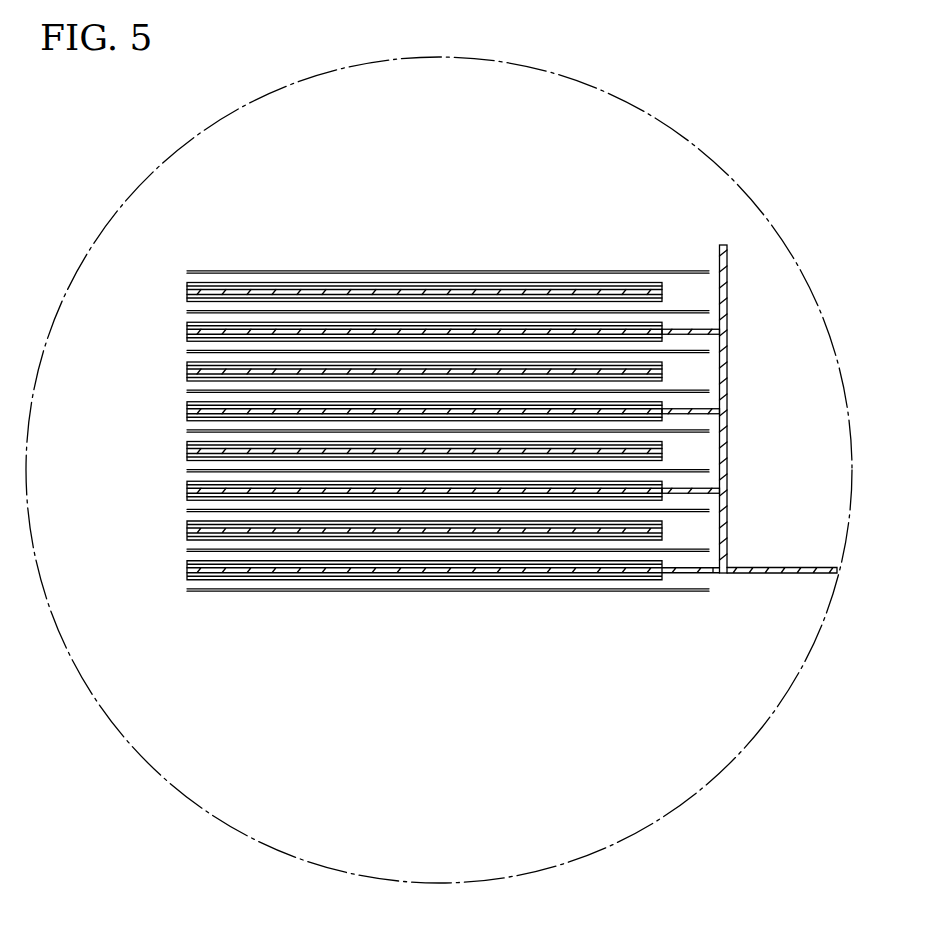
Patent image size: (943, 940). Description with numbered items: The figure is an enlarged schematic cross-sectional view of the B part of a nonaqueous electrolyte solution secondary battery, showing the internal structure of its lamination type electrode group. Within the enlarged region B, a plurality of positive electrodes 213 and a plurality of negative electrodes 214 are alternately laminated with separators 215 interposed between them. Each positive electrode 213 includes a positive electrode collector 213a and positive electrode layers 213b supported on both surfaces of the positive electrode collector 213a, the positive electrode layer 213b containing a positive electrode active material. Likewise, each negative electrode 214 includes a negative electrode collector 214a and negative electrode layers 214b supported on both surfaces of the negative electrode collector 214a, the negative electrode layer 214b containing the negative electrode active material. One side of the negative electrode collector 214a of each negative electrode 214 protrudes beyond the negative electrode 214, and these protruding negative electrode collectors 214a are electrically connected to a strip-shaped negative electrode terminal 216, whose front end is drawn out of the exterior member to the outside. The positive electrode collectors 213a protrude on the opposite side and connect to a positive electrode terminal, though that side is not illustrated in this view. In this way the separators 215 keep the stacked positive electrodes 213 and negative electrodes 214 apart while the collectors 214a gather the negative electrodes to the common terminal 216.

The positive electrode 213 is at (351, 437).
The positive electrode collector 213a is at (187, 531).
The positive electrode layer 213b is at (187, 523).
The negative electrode 214 is at (445, 495).
The negative electrode collector 214a is at (690, 333).
The negative electrode layer 214b is at (187, 564).
The separator 215 is at (517, 271).
The negative electrode terminal 216 is at (778, 575).
The B part B is at (713, 780).